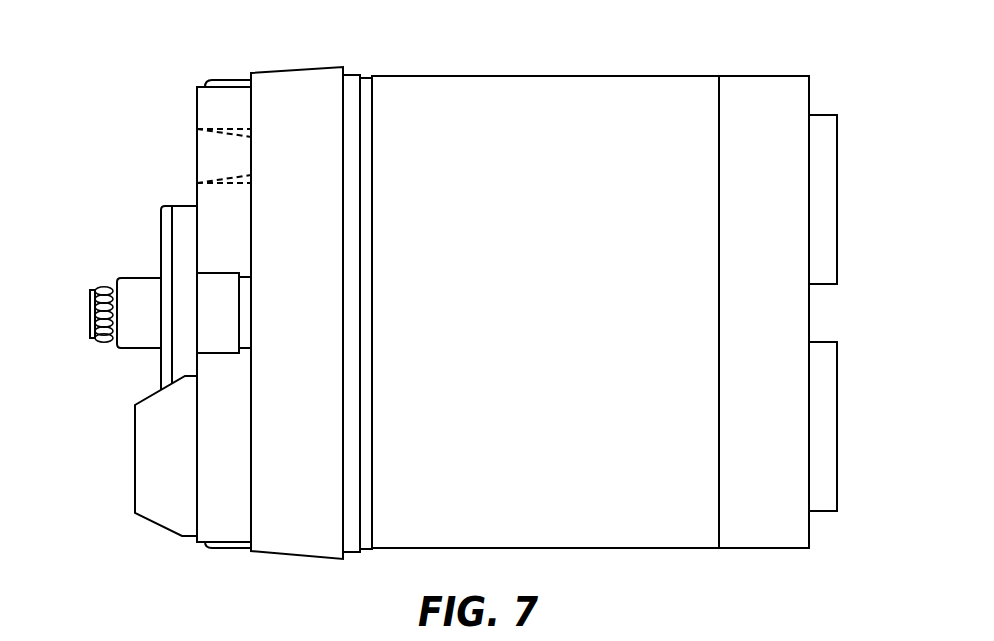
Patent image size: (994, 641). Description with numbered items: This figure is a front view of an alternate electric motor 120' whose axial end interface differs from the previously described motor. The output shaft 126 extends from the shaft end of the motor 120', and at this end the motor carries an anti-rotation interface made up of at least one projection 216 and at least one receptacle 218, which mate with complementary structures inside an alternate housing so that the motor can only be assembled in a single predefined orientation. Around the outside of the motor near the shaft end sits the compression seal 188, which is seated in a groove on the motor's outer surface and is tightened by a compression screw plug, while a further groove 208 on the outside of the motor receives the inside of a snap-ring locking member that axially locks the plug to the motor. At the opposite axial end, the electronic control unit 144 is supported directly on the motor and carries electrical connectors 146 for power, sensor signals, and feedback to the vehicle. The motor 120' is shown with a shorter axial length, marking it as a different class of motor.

The electric motor 120' is at (473, 305).
The compression seal 188 is at (297, 55).
The groove 208 is at (365, 90).
The receptacle 218 is at (215, 149).
The output shaft 126 is at (141, 343).
The projection 216 is at (158, 498).
The electrical connector 146 is at (822, 113).
The electronic control unit 144 is at (758, 538).